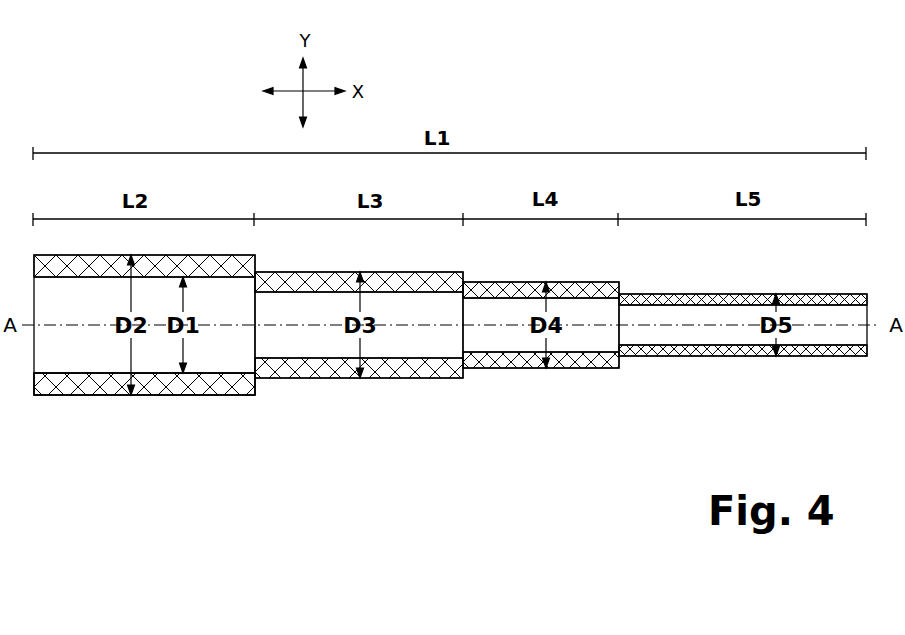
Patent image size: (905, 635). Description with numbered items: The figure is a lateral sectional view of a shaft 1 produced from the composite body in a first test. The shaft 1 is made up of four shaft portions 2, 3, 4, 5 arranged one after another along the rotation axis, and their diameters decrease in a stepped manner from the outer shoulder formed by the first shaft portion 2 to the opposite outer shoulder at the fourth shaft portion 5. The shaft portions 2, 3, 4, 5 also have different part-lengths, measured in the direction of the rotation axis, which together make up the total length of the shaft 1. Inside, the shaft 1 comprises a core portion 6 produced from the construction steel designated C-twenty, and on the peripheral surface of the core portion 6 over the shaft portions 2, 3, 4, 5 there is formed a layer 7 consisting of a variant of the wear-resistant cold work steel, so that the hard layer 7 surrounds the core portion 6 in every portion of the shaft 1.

The shaft 1 is at (450, 429).
The shaft portion 2 is at (107, 395).
The shaft portion 3 is at (328, 378).
The shaft portion 4 is at (520, 368).
The shaft portion 5 is at (703, 356).
The core portion 6 is at (80, 348).
The layer 7 is at (210, 385).